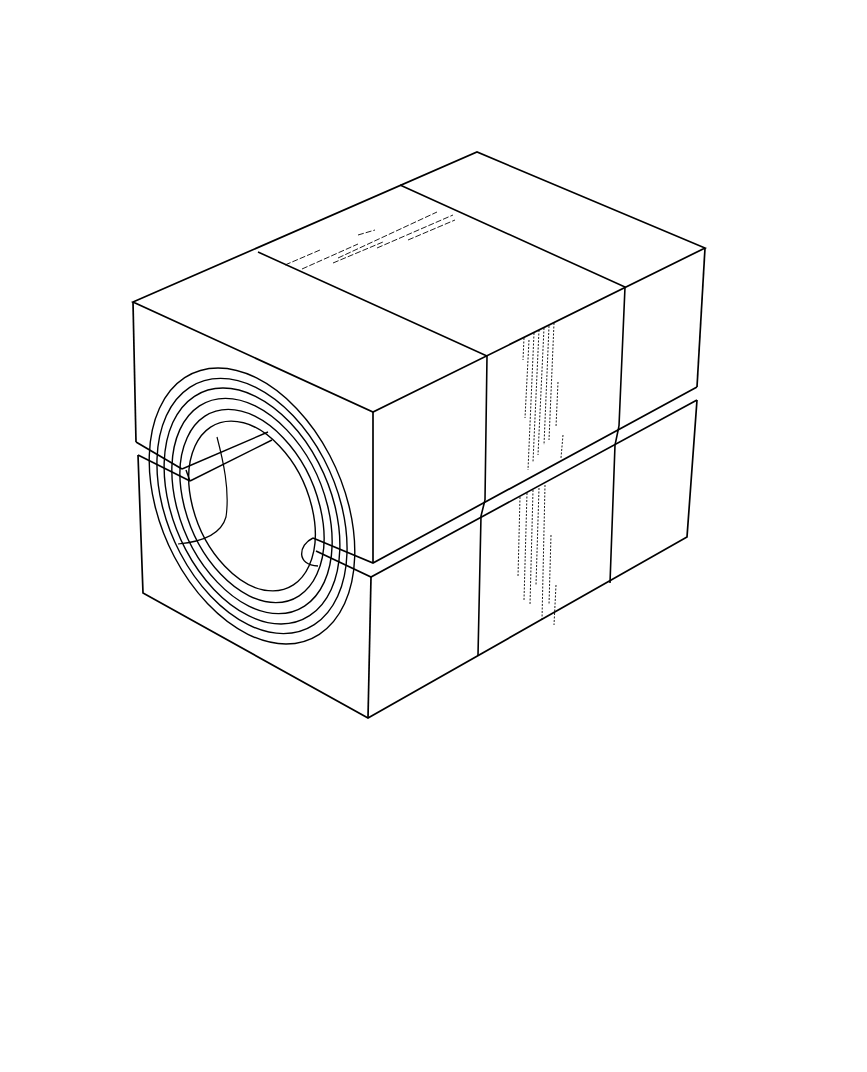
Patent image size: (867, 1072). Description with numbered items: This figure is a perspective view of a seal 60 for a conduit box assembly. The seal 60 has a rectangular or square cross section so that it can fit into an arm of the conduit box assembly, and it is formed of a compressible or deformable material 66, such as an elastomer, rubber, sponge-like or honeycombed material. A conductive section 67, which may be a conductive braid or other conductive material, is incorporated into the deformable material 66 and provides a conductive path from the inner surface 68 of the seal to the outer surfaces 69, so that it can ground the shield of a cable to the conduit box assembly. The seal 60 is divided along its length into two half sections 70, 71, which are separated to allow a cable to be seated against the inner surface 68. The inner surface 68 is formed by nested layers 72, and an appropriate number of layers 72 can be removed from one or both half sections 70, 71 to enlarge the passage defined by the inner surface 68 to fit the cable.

The seal 60 is at (264, 150).
The compressible or deformable material 66 is at (624, 232).
The conductive section 67 is at (583, 567).
The inner surface 68 is at (247, 558).
The outer surfaces 69 is at (477, 262).
The half section 70 is at (335, 678).
The half section 71 is at (160, 347).
The layers 72 is at (278, 593).